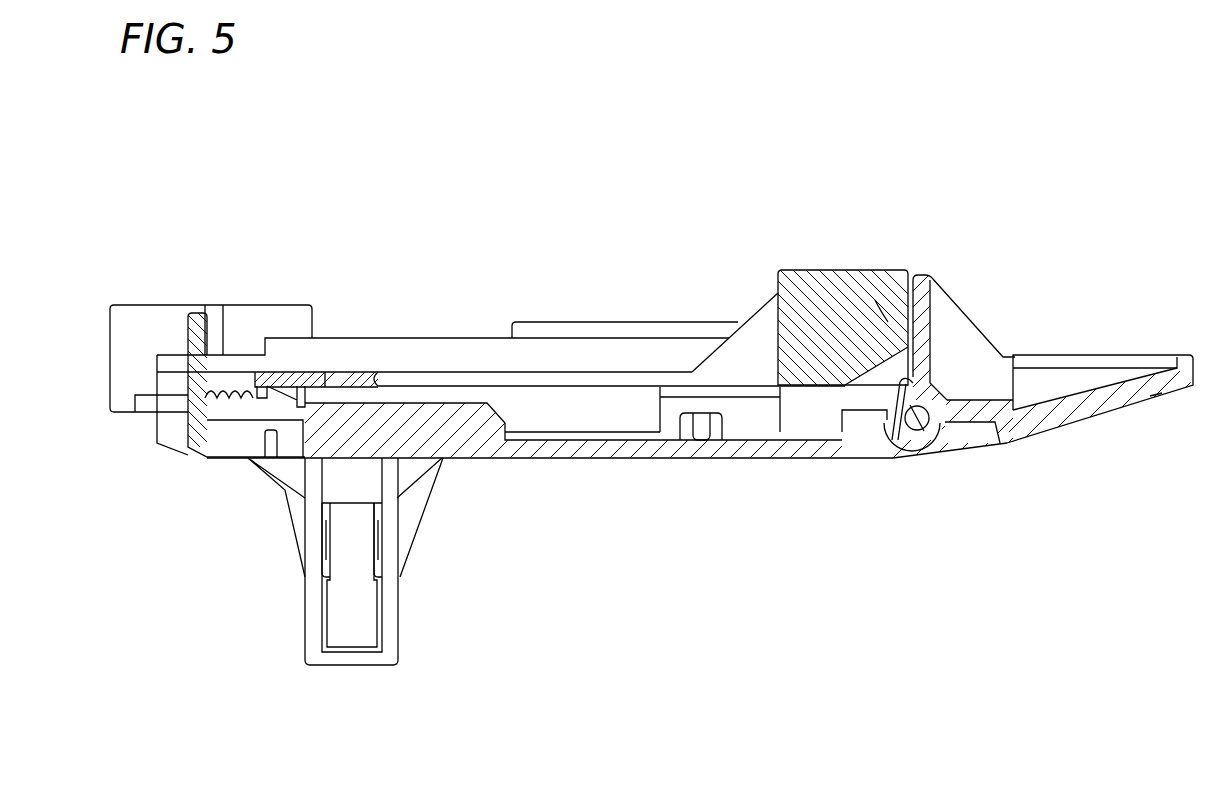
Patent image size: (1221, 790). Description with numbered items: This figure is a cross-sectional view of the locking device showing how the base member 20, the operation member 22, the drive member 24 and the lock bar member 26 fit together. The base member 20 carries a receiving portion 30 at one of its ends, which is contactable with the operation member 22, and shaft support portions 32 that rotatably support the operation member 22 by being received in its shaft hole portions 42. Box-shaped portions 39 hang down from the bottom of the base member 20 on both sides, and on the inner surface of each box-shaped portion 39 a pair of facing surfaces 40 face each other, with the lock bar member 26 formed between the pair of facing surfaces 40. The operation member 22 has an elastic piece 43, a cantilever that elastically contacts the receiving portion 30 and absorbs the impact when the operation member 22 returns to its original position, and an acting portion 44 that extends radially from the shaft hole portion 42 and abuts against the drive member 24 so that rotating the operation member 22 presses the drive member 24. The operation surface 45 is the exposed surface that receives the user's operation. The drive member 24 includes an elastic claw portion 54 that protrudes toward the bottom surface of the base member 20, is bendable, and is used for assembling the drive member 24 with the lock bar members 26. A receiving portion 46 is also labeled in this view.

The base member 20 is at (590, 458).
The operation member 22 is at (1087, 418).
The drive member 24 is at (797, 268).
The lock bar member 26 is at (362, 617).
The receiving portion 30 is at (893, 417).
The shaft support portion 32 is at (917, 418).
The box-shaped portion 39 is at (313, 647).
The facing surface 40 is at (323, 602).
The shaft hole portion 42 is at (930, 418).
The elastic piece 43 is at (892, 447).
The acting portion 44 is at (925, 317).
The operation surface 45 is at (1162, 393).
The receiving portion 46 is at (875, 300).
The elastic claw portion 54 is at (295, 390).